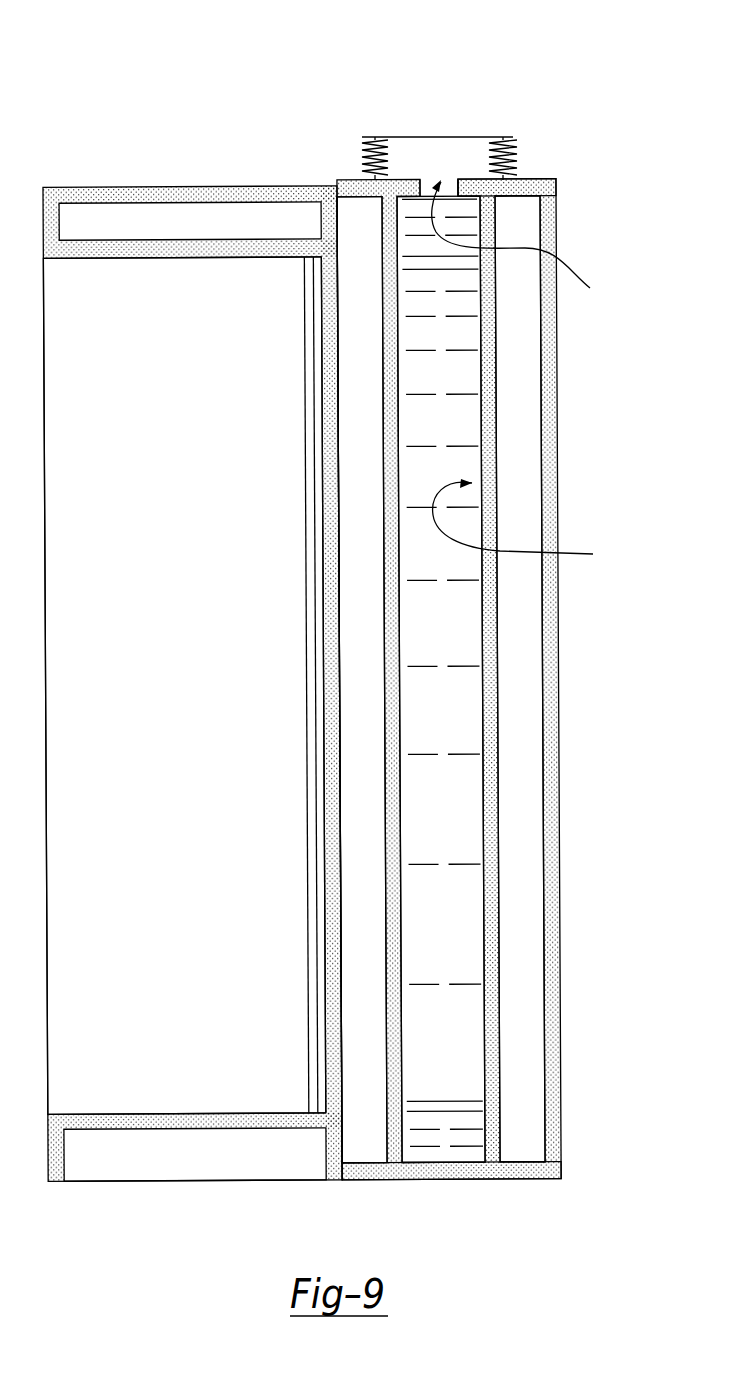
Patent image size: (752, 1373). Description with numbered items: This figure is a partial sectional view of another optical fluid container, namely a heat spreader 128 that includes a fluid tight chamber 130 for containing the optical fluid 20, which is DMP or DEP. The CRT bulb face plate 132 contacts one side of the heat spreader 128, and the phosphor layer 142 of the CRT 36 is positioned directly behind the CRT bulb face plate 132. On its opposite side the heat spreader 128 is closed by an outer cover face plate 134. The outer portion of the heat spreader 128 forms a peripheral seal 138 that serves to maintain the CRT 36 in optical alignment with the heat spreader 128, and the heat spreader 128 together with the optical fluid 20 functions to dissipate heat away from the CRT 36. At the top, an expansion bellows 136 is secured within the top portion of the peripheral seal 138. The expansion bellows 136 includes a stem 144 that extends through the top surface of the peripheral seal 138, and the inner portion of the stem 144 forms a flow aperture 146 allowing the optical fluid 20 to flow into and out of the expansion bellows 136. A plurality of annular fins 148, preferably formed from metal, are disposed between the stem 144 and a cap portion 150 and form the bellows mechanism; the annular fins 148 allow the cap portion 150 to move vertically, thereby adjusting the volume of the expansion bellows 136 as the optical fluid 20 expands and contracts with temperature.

The optical fluid 20 is at (451, 625).
The CRT 36 is at (186, 590).
The heat spreader 128 is at (183, 123).
The fluid tight chamber 130 is at (537, 525).
The CRT bulb face plate 132 is at (365, 417).
The outer cover face plate 134 is at (522, 427).
The expansion bellows 136 is at (557, 90).
The peripheral seal 138 is at (528, 182).
The phosphor layer 142 is at (304, 473).
The stem 144 is at (430, 177).
The flow aperture 146 is at (534, 243).
The annular fins 148 is at (363, 153).
The cap portion 150 is at (390, 137).